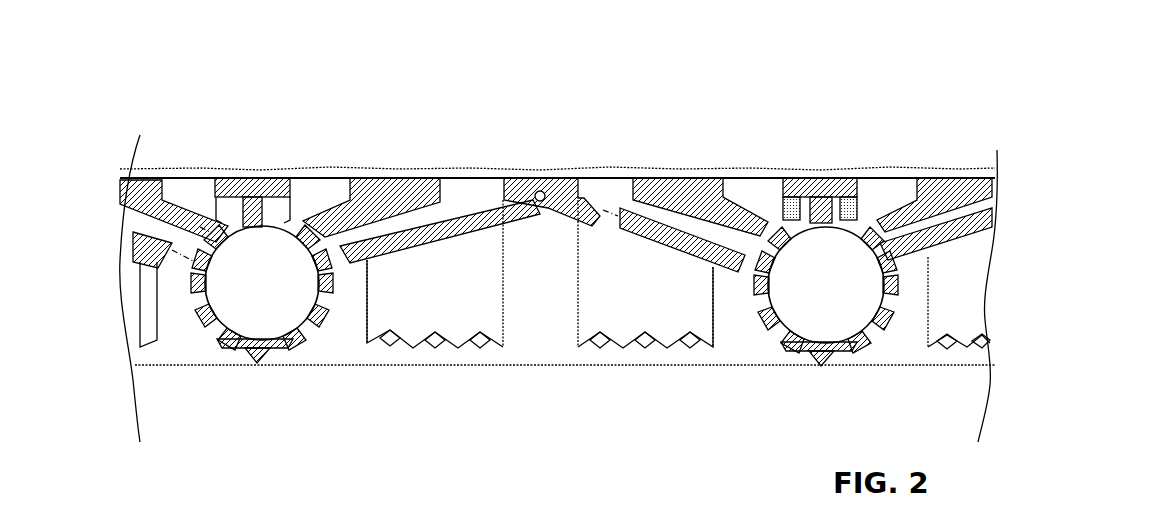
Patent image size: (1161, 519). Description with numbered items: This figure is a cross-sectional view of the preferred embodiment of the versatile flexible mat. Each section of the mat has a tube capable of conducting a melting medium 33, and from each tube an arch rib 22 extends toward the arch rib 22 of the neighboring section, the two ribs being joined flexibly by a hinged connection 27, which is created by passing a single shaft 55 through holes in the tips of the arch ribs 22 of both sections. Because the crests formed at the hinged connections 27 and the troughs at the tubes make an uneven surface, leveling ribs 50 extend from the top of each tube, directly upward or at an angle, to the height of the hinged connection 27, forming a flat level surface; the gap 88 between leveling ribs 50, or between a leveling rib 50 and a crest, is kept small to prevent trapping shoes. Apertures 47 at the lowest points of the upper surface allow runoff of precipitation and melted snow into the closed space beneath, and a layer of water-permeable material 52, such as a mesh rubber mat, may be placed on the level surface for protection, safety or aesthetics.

The water-permeable material 52 is at (336, 167).
The hinged connection 27 is at (533, 188).
The shaft 55 is at (547, 191).
The leveling rib 50 is at (705, 182).
The gap 88 is at (760, 187).
The arch rib 22 is at (353, 258).
The aperture 47 is at (155, 258).
The melting medium 33 is at (886, 306).